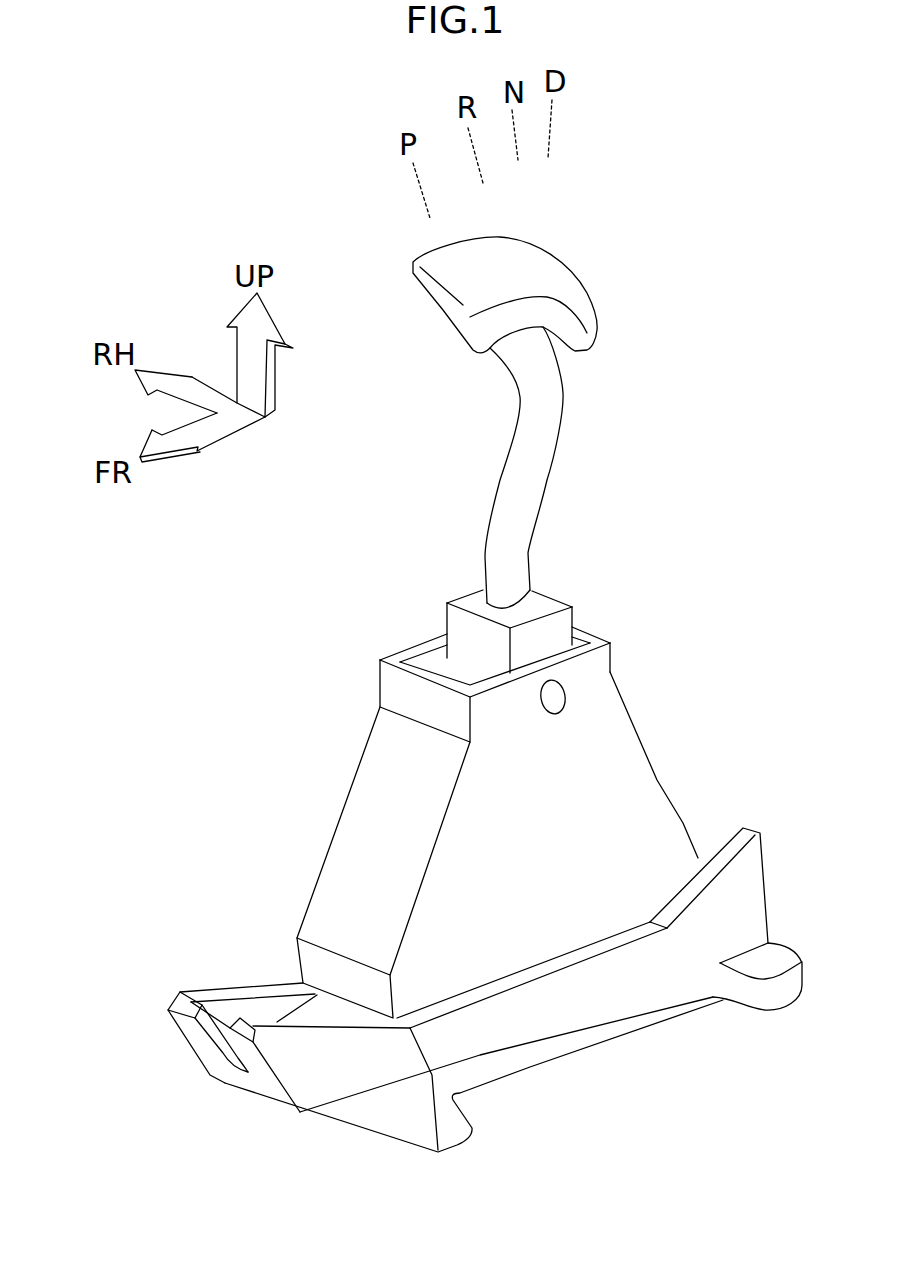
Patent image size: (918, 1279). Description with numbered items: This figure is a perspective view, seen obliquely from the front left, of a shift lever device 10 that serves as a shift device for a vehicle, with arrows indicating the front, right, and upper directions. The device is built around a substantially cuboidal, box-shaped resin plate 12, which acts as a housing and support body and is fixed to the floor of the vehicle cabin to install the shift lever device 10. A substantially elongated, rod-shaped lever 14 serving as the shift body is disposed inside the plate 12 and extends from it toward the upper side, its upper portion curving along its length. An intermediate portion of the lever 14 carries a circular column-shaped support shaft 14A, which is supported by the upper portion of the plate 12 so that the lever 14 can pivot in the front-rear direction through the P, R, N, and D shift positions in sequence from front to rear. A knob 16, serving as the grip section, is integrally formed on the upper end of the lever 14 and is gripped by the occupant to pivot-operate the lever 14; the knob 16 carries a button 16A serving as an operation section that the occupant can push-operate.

The shift lever device 10 is at (221, 655).
The plate 12 is at (349, 790).
The lever 14 is at (560, 447).
The support shaft 14A is at (557, 698).
The knob 16 is at (577, 287).
The button 16A is at (437, 295).